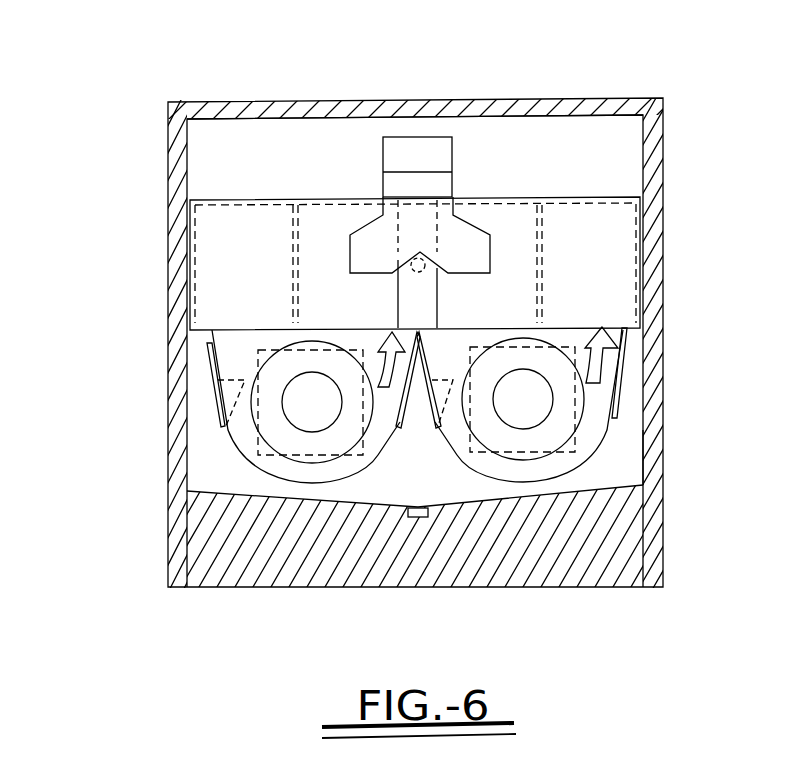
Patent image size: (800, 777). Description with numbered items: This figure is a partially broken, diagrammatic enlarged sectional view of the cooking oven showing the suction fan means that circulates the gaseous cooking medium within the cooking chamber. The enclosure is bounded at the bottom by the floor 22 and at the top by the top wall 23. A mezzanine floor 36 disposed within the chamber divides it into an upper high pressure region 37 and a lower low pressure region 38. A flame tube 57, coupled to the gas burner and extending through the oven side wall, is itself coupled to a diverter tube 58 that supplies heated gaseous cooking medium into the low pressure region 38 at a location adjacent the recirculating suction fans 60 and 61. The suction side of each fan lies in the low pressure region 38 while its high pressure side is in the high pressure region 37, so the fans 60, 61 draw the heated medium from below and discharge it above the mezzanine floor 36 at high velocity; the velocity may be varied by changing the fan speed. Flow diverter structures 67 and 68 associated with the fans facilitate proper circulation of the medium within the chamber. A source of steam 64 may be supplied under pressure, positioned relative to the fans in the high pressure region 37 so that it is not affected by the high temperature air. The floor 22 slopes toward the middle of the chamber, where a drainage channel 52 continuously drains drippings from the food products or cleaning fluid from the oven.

The floor 22 is at (320, 523).
The top wall 23 is at (322, 101).
The mezzanine floor 36 is at (600, 208).
The high pressure region 37 is at (225, 150).
The low pressure region 38 is at (632, 463).
The drainage channel 52 is at (418, 518).
The flame tube 57 is at (420, 137).
The diverter tube 58 is at (377, 252).
The recirculating suction fan 60 is at (270, 374).
The recirculating suction fan 61 is at (558, 368).
The source of steam 64 is at (421, 262).
The flow diverter structure 67 is at (238, 449).
The flow diverter structure 68 is at (607, 425).